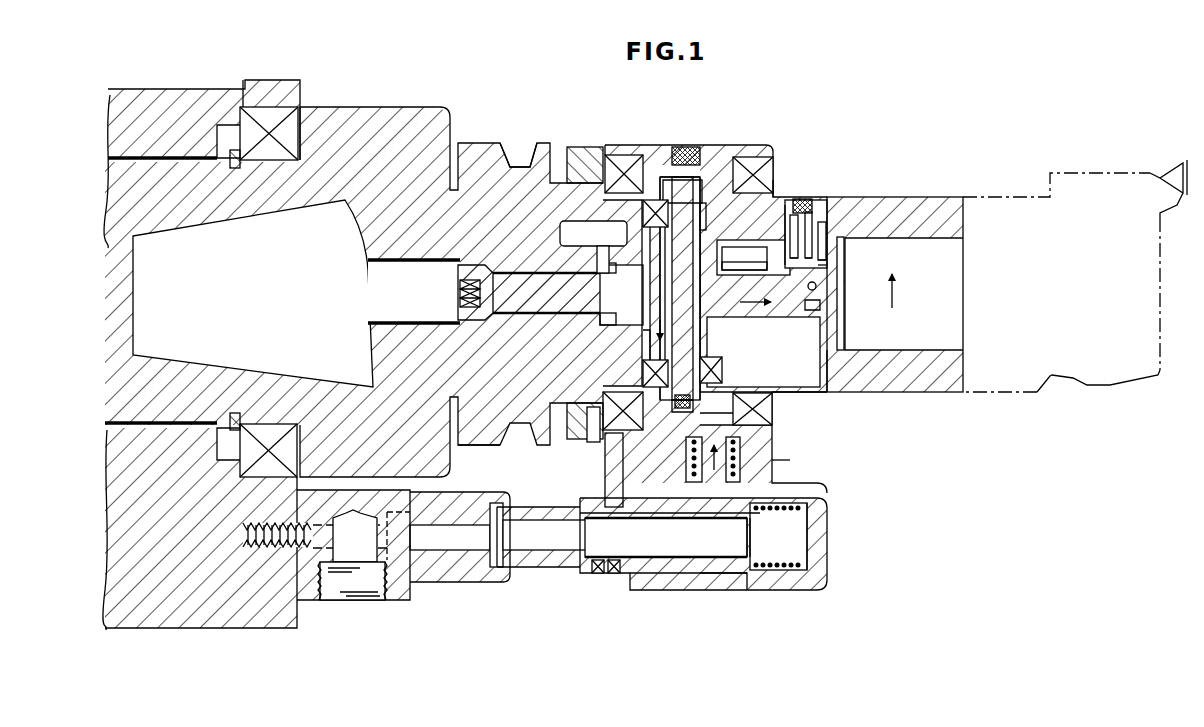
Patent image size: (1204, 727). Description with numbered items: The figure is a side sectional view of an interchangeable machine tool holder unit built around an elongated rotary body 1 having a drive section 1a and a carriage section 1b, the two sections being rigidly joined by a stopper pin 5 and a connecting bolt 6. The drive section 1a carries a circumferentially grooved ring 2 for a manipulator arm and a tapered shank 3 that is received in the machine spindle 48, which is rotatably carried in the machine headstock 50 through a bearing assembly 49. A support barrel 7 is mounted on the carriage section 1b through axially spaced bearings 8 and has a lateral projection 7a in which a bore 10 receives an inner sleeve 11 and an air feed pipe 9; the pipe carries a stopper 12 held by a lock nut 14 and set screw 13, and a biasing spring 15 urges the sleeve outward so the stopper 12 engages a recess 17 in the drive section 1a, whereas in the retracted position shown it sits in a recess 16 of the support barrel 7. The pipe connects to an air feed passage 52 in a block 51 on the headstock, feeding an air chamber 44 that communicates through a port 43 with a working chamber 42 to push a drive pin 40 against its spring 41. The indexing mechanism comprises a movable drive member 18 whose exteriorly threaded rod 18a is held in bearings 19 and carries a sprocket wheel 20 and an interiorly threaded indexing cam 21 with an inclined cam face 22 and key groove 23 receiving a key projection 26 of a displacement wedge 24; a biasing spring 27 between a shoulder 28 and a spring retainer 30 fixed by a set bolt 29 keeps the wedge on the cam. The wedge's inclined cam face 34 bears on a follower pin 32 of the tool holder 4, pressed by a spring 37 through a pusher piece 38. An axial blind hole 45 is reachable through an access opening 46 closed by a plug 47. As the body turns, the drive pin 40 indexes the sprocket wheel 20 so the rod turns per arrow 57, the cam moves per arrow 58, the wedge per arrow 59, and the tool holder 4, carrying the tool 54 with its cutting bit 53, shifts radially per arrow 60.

The rotary body 1 is at (486, 190).
The drive section 1a is at (493, 396).
The carriage section 1b is at (805, 394).
The circumferentially grooved ring 2 is at (506, 143).
The shank 3 is at (276, 231).
The tool holder 4 is at (947, 226).
The stopper pin 5 is at (577, 221).
The connecting bolt 6 is at (460, 280).
The support barrel 7 is at (765, 152).
The lateral projection 7a is at (727, 587).
The bearings 8 is at (623, 157).
The air feed pipe 9 is at (550, 558).
The bore 10 is at (790, 570).
The inner sleeve 11 is at (707, 565).
The stopper 12 is at (605, 494).
The set screw 13 is at (614, 566).
The lock nut 14 is at (593, 565).
The biasing spring 15 is at (795, 533).
The recess 16 is at (612, 483).
The recess 17 is at (597, 460).
The movable drive member 18 is at (708, 322).
The exteriorly threaded rod 18a is at (757, 386).
The bearings 19 is at (650, 200).
The sprocket wheel 20 is at (751, 424).
The indexing cam 21 is at (672, 262).
The inclined cam face 22 is at (772, 188).
The key groove 23 is at (735, 162).
The displacement wedge 24 is at (843, 364).
The key projection 26 is at (776, 210).
The biasing spring 27 is at (822, 240).
The shoulder 28 is at (800, 232).
The set bolt 29 is at (812, 250).
The spring retainer 30 is at (825, 262).
The follower pin 32 is at (816, 287).
The inclined cam face 34 is at (816, 308).
The spring 37 is at (838, 254).
The pusher piece 38 is at (822, 266).
The drive pin 40 is at (792, 498).
The spring 41 is at (776, 479).
The working chamber 42 is at (750, 570).
The port 43 is at (812, 560).
The air chamber 44 is at (810, 511).
The axial blind hole 45 is at (745, 457).
The access opening 46 is at (676, 148).
The plug 47 is at (706, 218).
The machine spindle 48 is at (402, 122).
The bearing assembly 49 is at (280, 116).
The machine headstock 50 is at (288, 614).
The block 51 is at (467, 563).
The air feed passage 52 is at (381, 587).
The cutting bit 53 is at (1177, 163).
The tool 54 is at (1068, 185).
The arrow 57 is at (657, 372).
The arrow 58 is at (639, 330).
The arrow 59 is at (747, 310).
The arrow 60 is at (893, 300).